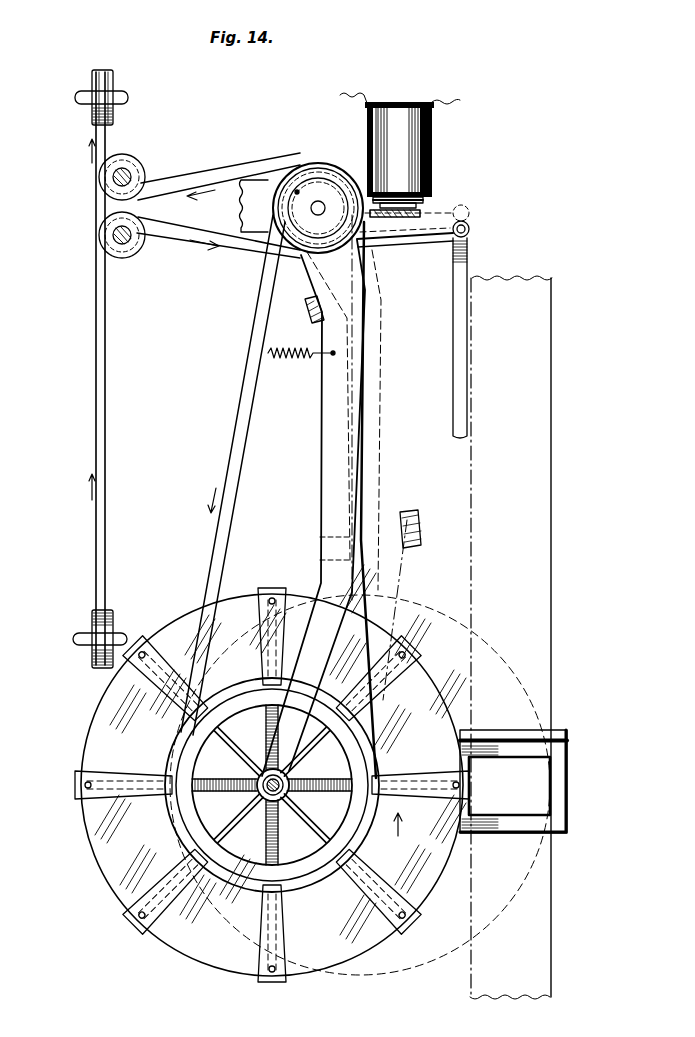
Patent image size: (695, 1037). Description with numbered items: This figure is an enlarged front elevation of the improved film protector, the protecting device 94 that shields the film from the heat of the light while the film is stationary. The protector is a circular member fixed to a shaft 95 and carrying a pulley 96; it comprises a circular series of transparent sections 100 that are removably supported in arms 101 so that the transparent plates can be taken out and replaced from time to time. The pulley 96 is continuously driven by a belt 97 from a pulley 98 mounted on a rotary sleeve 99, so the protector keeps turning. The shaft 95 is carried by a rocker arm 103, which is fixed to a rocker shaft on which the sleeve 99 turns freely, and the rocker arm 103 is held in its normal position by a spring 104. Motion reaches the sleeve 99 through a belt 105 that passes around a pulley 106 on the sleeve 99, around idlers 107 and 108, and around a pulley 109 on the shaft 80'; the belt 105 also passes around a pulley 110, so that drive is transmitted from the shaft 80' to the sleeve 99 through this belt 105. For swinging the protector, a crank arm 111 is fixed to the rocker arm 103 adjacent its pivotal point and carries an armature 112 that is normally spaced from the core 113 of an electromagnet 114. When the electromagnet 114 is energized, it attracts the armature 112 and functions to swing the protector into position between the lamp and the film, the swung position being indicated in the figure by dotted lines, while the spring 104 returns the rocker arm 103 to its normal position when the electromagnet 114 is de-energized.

The shaft 80' is at (70, 368).
The protecting device 94 is at (119, 883).
The shaft 95 is at (278, 769).
The pulley 96 is at (357, 818).
The belt 97 is at (237, 413).
The pulley 98 is at (297, 190).
The rotary sleeve 99 is at (322, 198).
The transparent sections 100 is at (100, 853).
The arms 101 is at (77, 783).
The rocker arm 103 is at (330, 469).
The spring 104 is at (297, 359).
The belt 105 is at (178, 241).
The pulley 106 is at (323, 154).
The idler 107 is at (141, 163).
The idler 108 is at (137, 262).
The pulley 109 is at (93, 658).
The pulley 110 is at (112, 87).
The crank arm 111 is at (428, 238).
The armature 112 is at (445, 212).
The core 113 is at (430, 182).
The electromagnet 114 is at (432, 144).